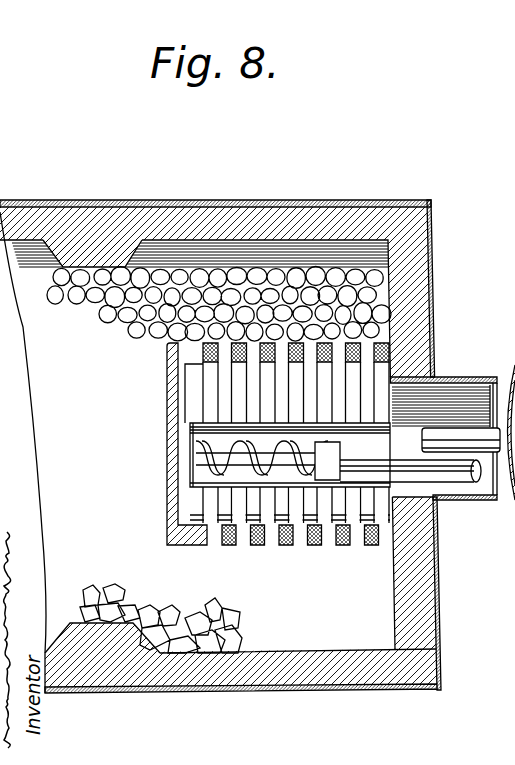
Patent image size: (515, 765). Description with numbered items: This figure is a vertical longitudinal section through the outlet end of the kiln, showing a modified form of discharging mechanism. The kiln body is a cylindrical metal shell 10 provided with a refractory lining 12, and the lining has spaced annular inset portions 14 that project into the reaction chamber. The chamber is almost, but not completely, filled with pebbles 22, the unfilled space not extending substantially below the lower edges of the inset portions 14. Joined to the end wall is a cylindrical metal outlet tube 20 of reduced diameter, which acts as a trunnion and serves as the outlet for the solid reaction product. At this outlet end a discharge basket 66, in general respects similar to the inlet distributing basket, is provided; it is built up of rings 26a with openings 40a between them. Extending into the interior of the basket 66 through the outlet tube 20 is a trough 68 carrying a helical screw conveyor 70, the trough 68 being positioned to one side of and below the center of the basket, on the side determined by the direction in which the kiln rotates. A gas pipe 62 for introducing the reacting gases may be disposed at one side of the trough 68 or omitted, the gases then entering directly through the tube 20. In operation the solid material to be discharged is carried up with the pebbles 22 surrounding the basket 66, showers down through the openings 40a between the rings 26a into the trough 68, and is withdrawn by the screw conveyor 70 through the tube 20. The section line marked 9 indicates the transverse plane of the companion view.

The section line 9- 9 is at (235, 730).
The cylindrical metal shell 10 is at (432, 281).
The refractory lining 12 is at (343, 218).
The annular inset portion 14 is at (93, 250).
The outlet tube 20 is at (458, 378).
The pebbles 22 is at (133, 333).
The rings 26a is at (245, 525).
The openings 40a is at (238, 352).
The shaft 62 is at (443, 433).
The discharge basket 66 is at (190, 426).
The trough 68 is at (196, 448).
The helical screw conveyor 70 is at (200, 470).